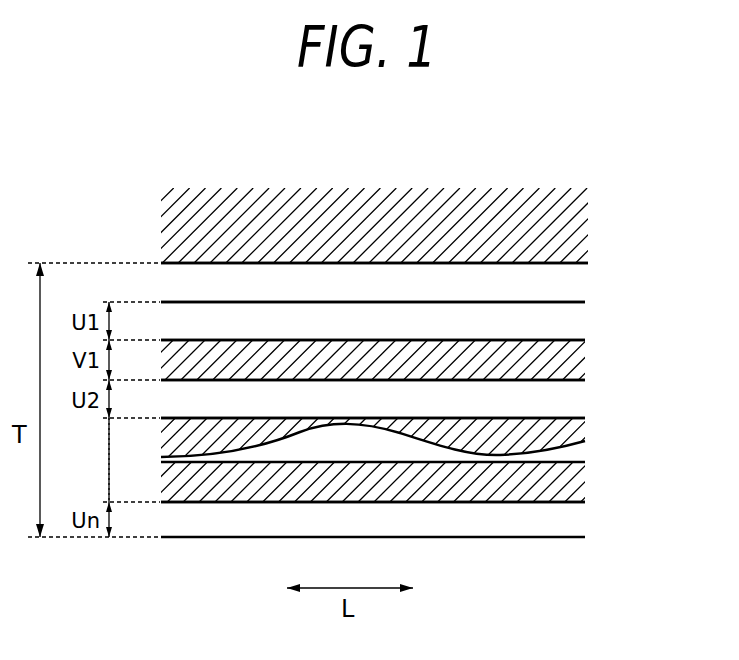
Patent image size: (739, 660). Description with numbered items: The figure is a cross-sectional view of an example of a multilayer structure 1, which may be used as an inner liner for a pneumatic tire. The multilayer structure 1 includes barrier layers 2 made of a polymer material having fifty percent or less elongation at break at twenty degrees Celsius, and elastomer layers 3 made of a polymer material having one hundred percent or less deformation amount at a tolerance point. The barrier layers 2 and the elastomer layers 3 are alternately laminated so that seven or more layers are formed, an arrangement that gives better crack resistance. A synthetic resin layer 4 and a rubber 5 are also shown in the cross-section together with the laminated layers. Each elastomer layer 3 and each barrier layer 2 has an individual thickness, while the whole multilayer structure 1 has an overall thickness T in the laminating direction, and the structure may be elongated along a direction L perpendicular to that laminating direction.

The multilayer structure 1 is at (425, 322).
The barrier layer 2 is at (573, 320).
The elastomer layer 3 is at (572, 362).
The synthetic resin layer 4 is at (573, 281).
The rubber 5 is at (380, 238).